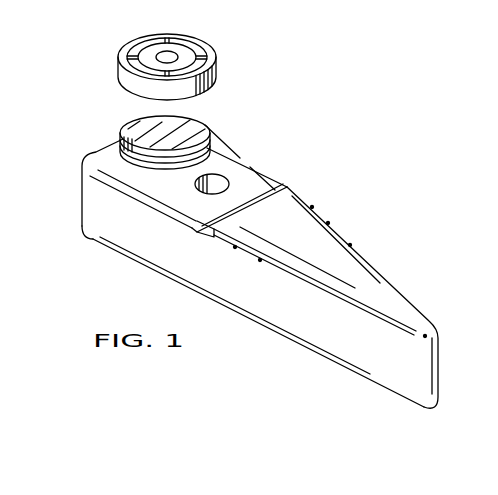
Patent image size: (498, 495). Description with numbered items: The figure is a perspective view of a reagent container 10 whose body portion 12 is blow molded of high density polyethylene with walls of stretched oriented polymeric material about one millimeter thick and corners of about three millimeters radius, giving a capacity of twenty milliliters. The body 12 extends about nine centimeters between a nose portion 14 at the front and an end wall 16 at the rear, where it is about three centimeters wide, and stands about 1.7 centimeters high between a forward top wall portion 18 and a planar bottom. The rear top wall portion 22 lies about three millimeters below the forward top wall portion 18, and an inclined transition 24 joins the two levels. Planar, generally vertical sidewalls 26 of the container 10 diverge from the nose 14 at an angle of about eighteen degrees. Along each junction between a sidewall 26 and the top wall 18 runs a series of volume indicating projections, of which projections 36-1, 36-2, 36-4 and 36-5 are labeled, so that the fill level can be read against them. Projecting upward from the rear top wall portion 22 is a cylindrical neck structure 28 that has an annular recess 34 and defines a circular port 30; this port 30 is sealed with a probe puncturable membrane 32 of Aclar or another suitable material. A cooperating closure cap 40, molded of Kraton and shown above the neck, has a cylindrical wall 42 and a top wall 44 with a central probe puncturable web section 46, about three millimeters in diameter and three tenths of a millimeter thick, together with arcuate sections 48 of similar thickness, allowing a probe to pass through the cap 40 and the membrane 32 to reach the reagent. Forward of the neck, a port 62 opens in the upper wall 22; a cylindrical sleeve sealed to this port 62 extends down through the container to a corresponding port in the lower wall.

The reagent container 10 is at (356, 224).
The body portion 12 is at (96, 250).
The nose portion 14 is at (440, 364).
The end wall 16 is at (80, 180).
The forward top wall portion 18 is at (385, 290).
The rear top wall portion 22 is at (233, 162).
The inclined transition 24 is at (256, 197).
The sidewalls 26 is at (281, 329).
The cylindrical neck structure 28 is at (104, 140).
The circular port 30 is at (100, 125).
The probe puncturable membrane 32 is at (183, 120).
The annular recess 34 is at (227, 158).
The volume indicating projection 36-1 is at (384, 277).
The volume indicating projection 36-2 is at (354, 247).
The volume indicating projection 36-4 is at (235, 248).
The volume indicating projection 36-5 is at (290, 188).
The closure cap 40 is at (230, 62).
The cylindrical wall 42 is at (117, 66).
The top wall 44 is at (139, 42).
The central probe puncturable web section 46 is at (172, 56).
The arcuate sections 48 is at (148, 62).
The port 62 is at (228, 180).